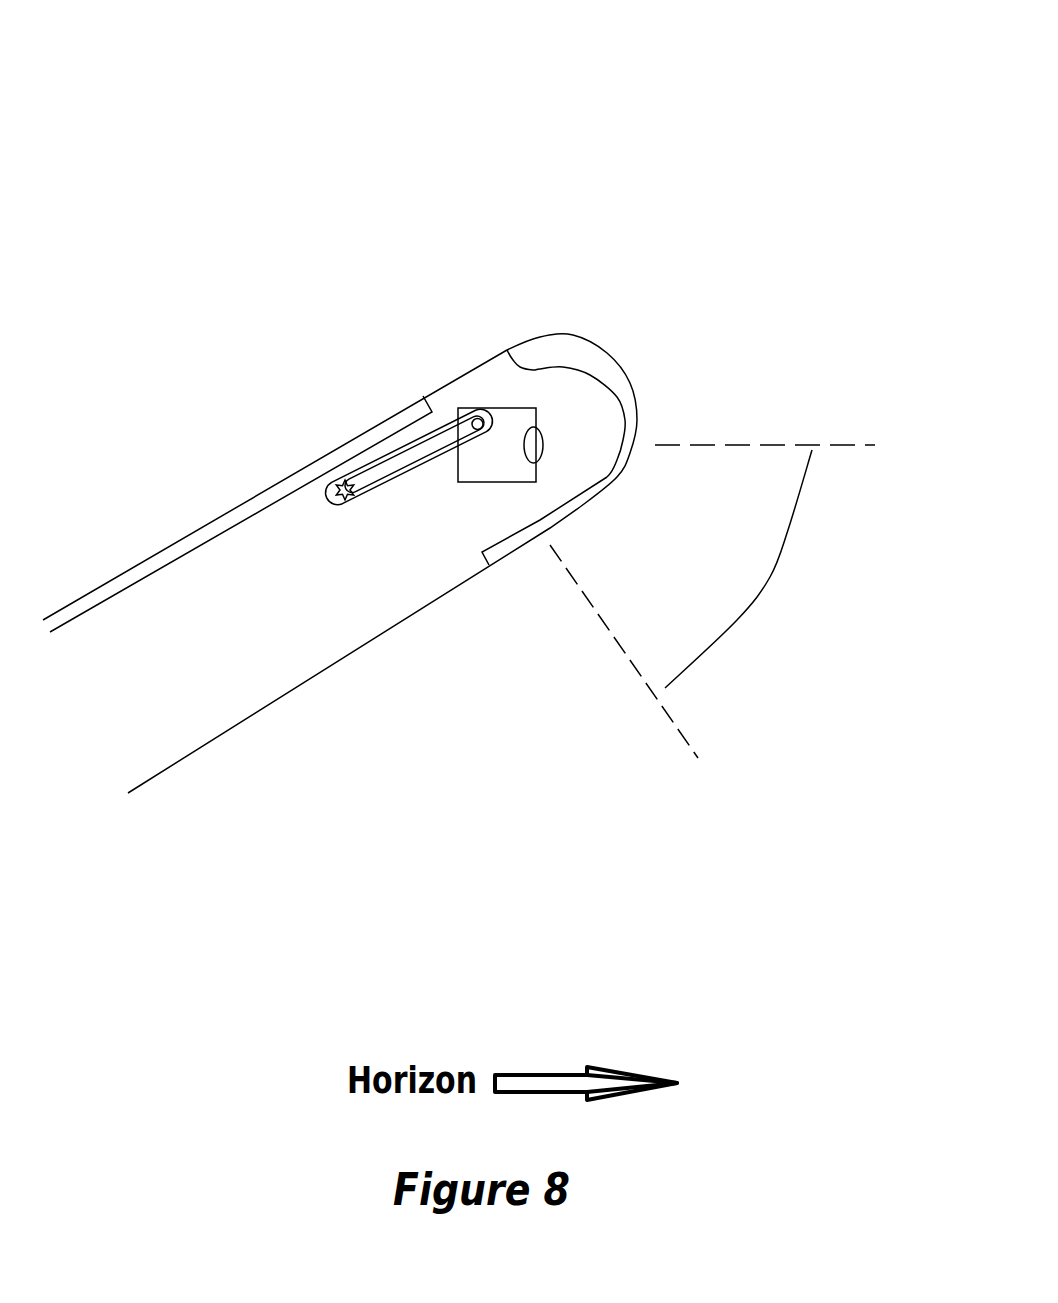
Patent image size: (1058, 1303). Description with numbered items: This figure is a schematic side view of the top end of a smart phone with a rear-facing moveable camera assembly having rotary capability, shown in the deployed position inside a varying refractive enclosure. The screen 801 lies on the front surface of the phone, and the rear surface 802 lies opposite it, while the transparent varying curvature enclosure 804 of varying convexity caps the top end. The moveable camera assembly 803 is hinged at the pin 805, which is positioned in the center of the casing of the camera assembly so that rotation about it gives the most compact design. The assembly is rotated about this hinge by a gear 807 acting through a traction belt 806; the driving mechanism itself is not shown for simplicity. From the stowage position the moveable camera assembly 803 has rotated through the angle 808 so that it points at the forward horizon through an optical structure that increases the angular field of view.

The screen 801 is at (238, 497).
The rear surface 802 is at (260, 728).
The moveable camera assembly 803 is at (498, 482).
The transparent varying curvature enclosure 804 is at (570, 327).
The pin 805 is at (472, 413).
The traction belt 806 is at (405, 440).
The gear 807 is at (337, 465).
The angle of rotation 808 is at (777, 620).